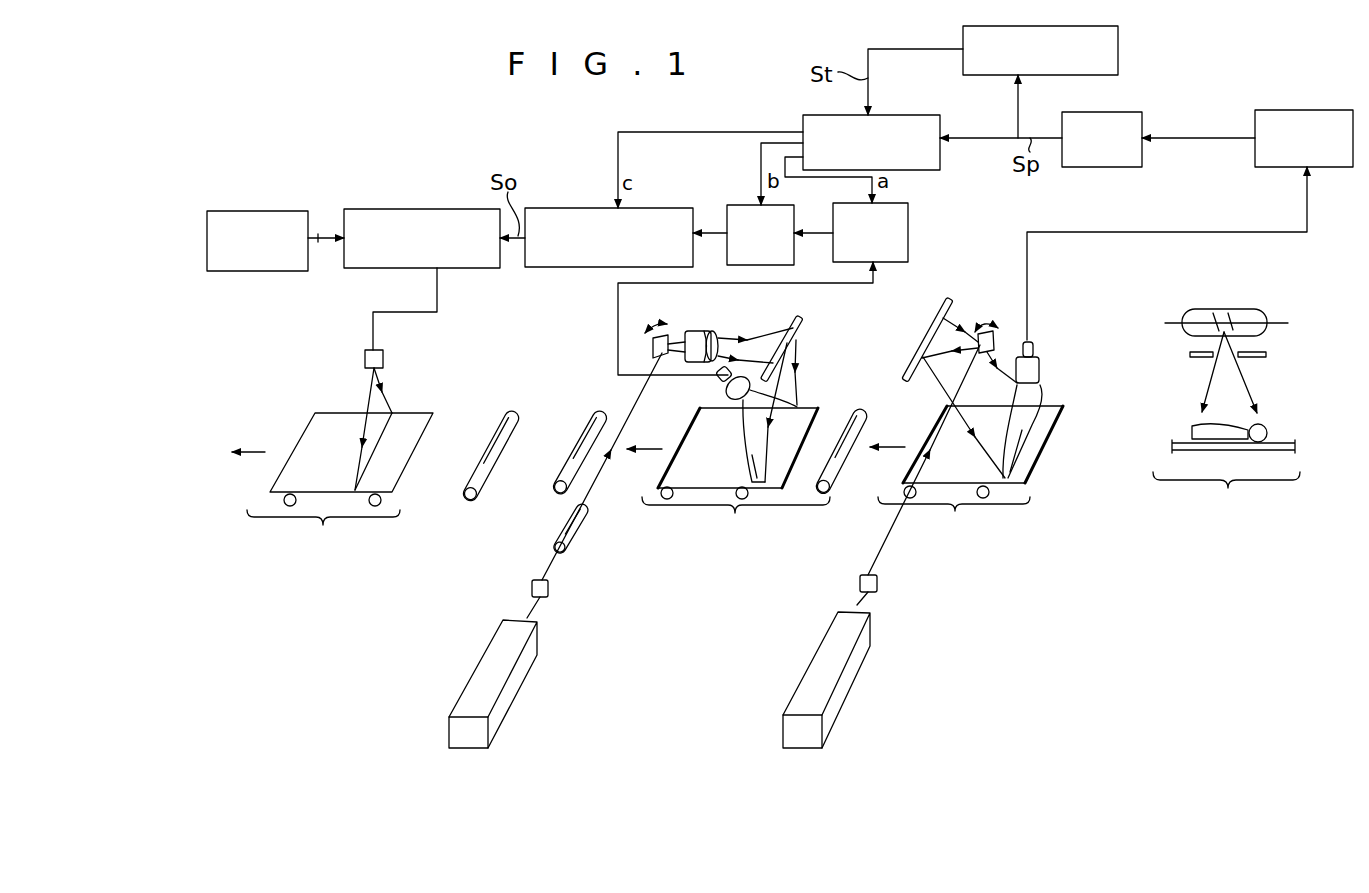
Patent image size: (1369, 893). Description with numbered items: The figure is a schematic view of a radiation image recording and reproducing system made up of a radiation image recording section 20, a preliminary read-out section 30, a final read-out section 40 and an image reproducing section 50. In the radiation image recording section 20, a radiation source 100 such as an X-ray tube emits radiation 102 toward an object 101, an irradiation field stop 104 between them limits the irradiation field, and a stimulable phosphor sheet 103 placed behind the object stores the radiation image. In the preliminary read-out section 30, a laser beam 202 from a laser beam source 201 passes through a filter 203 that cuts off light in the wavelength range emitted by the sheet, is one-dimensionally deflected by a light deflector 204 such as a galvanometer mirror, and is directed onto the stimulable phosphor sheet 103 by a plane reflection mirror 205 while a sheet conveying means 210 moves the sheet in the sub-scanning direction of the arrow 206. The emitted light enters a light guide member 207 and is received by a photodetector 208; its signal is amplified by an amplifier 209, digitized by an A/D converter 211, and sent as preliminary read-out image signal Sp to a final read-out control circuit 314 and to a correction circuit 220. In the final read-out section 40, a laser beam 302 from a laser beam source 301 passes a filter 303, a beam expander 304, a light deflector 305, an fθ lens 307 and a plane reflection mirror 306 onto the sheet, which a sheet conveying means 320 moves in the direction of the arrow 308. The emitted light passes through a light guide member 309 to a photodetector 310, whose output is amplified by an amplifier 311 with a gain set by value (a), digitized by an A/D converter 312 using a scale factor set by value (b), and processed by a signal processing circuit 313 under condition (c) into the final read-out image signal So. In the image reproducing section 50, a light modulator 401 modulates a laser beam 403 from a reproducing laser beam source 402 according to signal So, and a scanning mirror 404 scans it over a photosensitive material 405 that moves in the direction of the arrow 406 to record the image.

The radiation image recording section 20 is at (1226, 495).
The preliminary read-out section 30 is at (954, 521).
The final read-out section 40 is at (736, 522).
The image reproducing section 50 is at (323, 534).
The radiation source 100 is at (1258, 308).
The object 101 is at (1193, 425).
The radiation 102 is at (1210, 378).
The stimulable phosphor sheet 103 is at (807, 427).
The irradiation field stop 104 is at (1196, 352).
The laser beam source 201 is at (858, 665).
The laser beam 202 is at (862, 603).
The filter 203 is at (880, 581).
The light deflector 204 is at (997, 338).
The plane reflection mirror 205 is at (930, 316).
The arrow 206 is at (892, 447).
The light guide member 207 is at (1032, 405).
The photodetector 208 is at (1040, 364).
The amplifier 209 is at (1302, 112).
The sheet conveying means 210 is at (990, 497).
The A/D converter 211 is at (1105, 112).
The correction circuit 220 is at (1118, 50).
The laser beam source 301 is at (525, 668).
The laser beam 302 is at (535, 608).
The filter 303 is at (550, 585).
The beam expander 304 is at (582, 525).
The light deflector 305 is at (672, 338).
The plane reflection mirror 306 is at (803, 332).
The fθ lens 307 is at (715, 330).
The arrow 308 is at (655, 449).
The light guide member 309 is at (780, 408).
The photodetector 310 is at (722, 388).
The amplifier 311 is at (908, 222).
The A/D converter 312 is at (735, 205).
The signal processing circuit 313 is at (570, 208).
The final read-out control circuit 314 is at (905, 115).
The sheet conveying means 320 is at (745, 498).
The light modulator 401 is at (437, 209).
The reproducing laser beam source 402 is at (285, 211).
The laser beam 403 is at (320, 242).
The scanning mirror 404 is at (385, 362).
The photosensitive material 405 is at (332, 427).
The arrow 406 is at (258, 450).